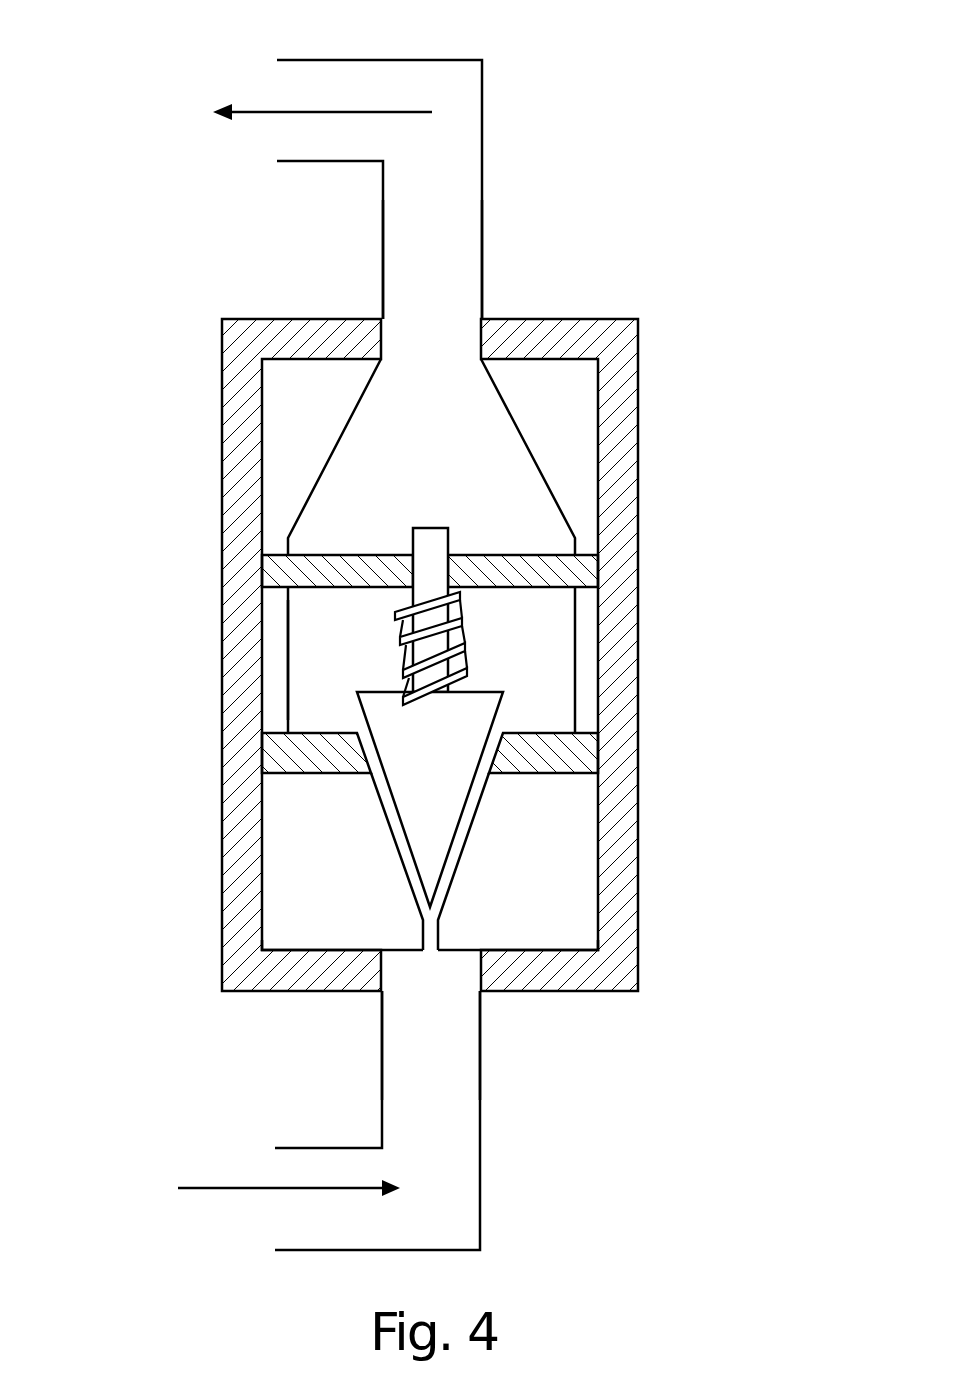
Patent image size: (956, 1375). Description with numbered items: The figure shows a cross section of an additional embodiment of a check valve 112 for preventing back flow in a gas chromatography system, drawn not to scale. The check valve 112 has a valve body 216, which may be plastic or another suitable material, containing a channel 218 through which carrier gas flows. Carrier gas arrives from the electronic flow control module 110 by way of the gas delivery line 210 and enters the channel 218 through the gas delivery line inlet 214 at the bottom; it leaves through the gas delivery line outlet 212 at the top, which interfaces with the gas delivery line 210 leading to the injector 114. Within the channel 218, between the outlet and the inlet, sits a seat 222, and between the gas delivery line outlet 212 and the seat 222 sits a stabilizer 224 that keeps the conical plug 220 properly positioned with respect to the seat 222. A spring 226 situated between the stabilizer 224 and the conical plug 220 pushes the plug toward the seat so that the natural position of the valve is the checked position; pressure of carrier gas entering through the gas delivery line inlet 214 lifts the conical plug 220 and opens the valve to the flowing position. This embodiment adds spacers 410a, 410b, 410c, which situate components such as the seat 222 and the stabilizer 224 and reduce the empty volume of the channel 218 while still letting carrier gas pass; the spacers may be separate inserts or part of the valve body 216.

The check valve 112 is at (138, 68).
The injector 114 is at (322, 125).
The electronic flow control module 110 is at (277, 1214).
The gas delivery line 210 is at (482, 198).
The gas delivery line outlet 212 is at (381, 319).
The gas delivery line inlet 214 is at (381, 993).
The valve body 216 is at (639, 331).
The channel 218 is at (315, 620).
The conical plug 220 is at (450, 808).
The seat 222 is at (600, 760).
The stabilizer 224 is at (593, 572).
The spring 226 is at (458, 620).
The spacer 410a is at (334, 404).
The spacer 410b is at (280, 695).
The spacer 410c is at (357, 888).